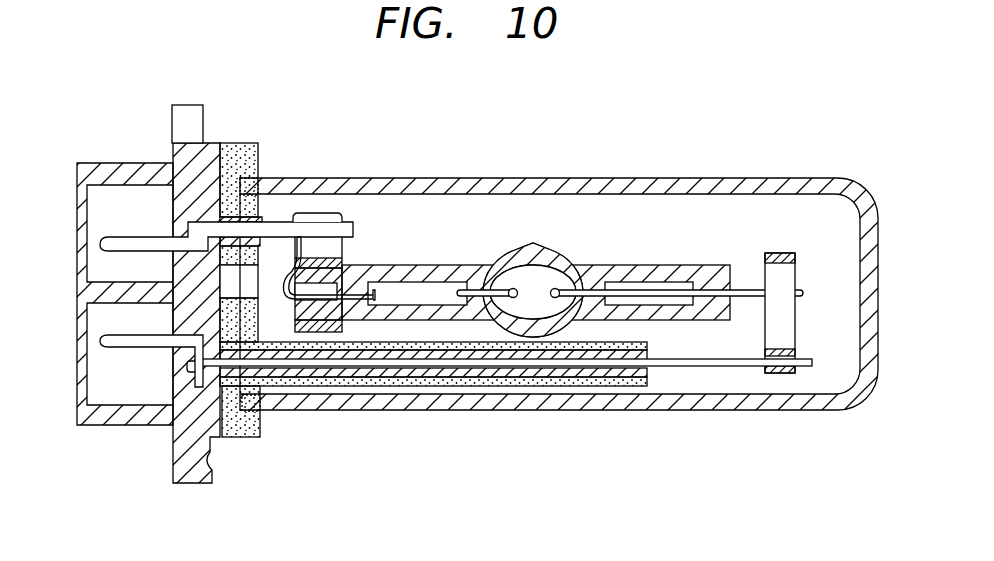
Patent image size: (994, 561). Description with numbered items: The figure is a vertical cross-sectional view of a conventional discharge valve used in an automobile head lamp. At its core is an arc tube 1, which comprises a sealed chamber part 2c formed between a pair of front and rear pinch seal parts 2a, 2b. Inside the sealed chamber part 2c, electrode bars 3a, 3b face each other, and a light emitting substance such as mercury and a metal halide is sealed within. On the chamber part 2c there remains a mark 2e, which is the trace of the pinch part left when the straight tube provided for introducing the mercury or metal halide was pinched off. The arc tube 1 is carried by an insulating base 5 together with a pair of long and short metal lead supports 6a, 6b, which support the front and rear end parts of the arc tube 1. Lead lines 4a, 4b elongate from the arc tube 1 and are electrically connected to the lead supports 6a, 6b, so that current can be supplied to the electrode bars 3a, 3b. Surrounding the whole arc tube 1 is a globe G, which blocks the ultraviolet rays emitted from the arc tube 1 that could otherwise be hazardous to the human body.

The arc tube 1 is at (549, 293).
The front pinch seal part 2a is at (667, 320).
The rear pinch seal part 2b is at (403, 320).
The sealed chamber part 2c is at (535, 336).
The mark 2e is at (538, 243).
The electrode bar 3a is at (573, 265).
The electrode bar 3b is at (505, 250).
The lead line 4a is at (748, 290).
The lead line 4b is at (315, 300).
The insulating base 5 is at (216, 138).
The lead support 6a is at (735, 367).
The lead support 6b is at (350, 222).
The globe G is at (420, 178).